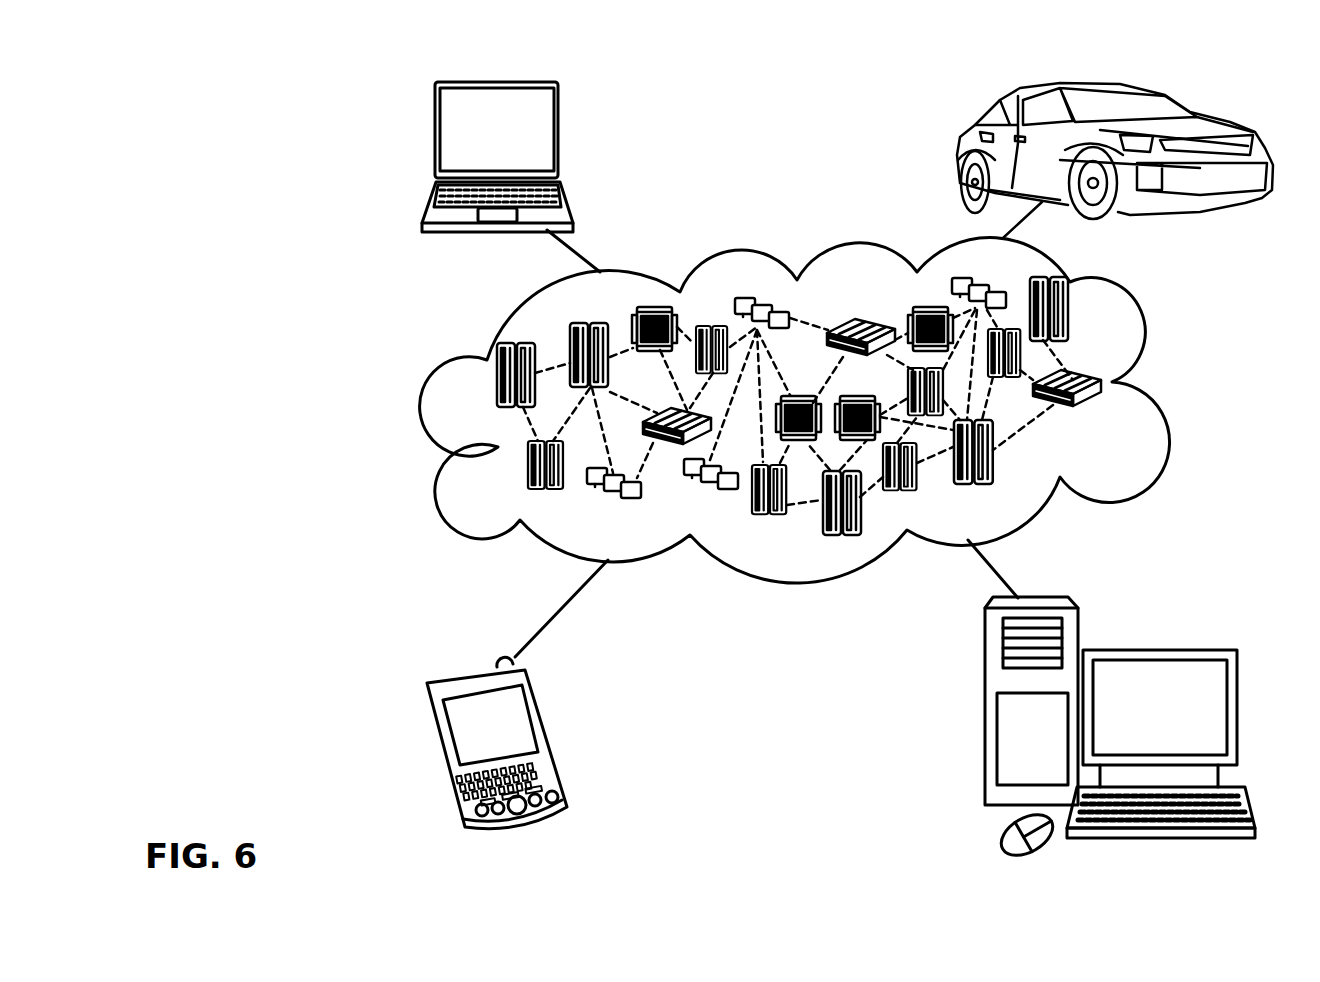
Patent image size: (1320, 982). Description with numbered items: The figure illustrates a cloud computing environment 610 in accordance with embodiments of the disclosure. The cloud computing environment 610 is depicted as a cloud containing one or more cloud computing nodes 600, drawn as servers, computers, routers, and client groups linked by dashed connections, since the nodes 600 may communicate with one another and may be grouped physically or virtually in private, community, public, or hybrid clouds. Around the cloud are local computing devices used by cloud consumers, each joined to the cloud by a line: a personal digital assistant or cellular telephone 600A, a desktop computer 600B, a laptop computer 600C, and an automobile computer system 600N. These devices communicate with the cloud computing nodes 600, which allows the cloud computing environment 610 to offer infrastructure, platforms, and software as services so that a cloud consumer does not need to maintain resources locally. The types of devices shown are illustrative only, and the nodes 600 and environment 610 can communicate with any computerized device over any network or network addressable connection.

The cloud computing nodes 600 is at (178, 83).
The cloud computing environment 610 is at (1158, 388).
The personal digital assistant (PDA) or cellular telephone 600A is at (553, 737).
The desktop computer 600B is at (1157, 648).
The laptop computer 600C is at (559, 138).
The automobile computer system 600N is at (960, 152).